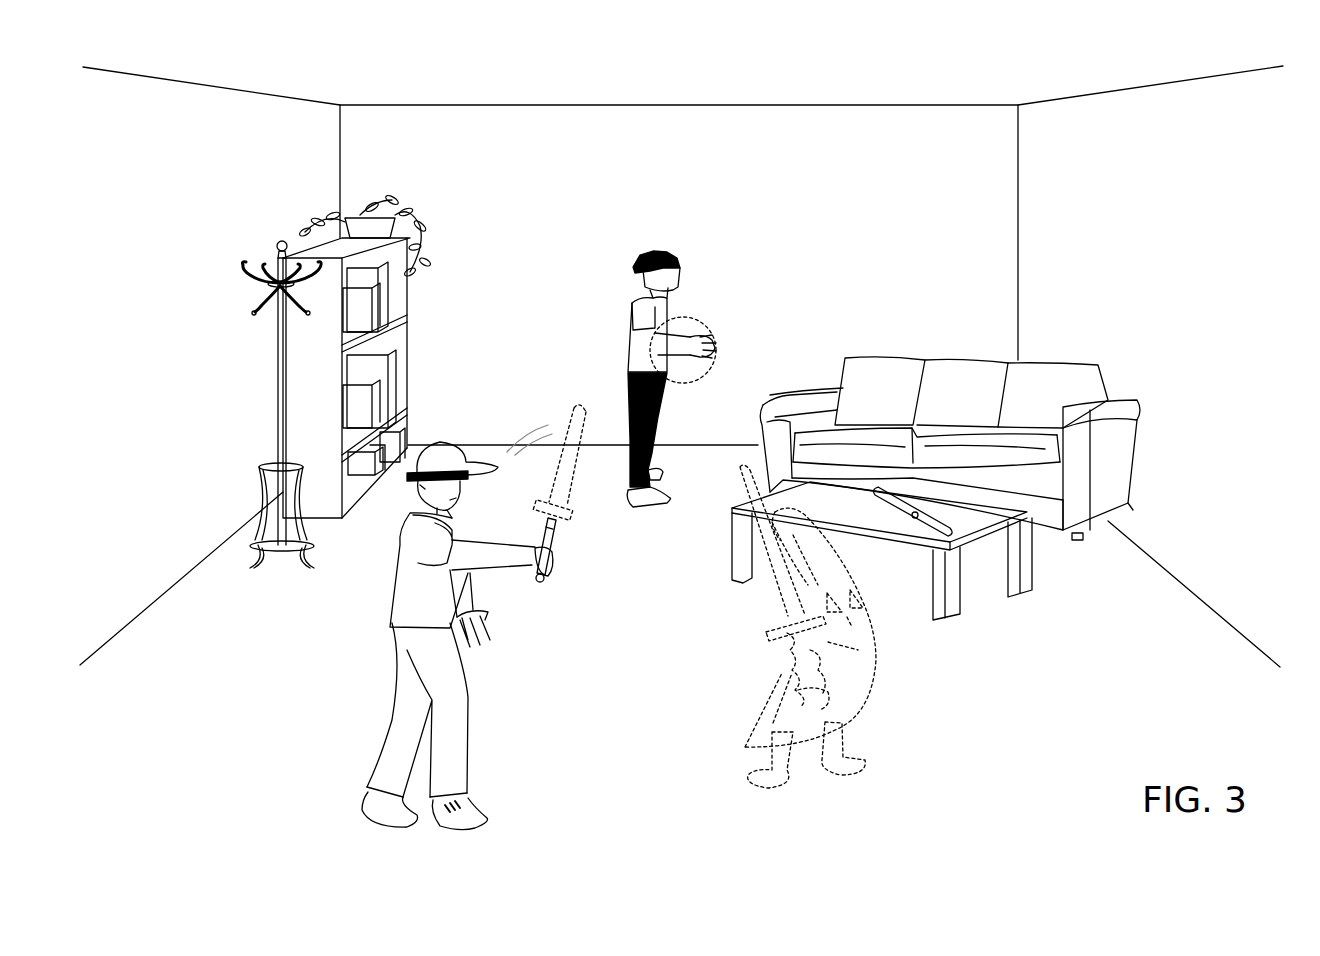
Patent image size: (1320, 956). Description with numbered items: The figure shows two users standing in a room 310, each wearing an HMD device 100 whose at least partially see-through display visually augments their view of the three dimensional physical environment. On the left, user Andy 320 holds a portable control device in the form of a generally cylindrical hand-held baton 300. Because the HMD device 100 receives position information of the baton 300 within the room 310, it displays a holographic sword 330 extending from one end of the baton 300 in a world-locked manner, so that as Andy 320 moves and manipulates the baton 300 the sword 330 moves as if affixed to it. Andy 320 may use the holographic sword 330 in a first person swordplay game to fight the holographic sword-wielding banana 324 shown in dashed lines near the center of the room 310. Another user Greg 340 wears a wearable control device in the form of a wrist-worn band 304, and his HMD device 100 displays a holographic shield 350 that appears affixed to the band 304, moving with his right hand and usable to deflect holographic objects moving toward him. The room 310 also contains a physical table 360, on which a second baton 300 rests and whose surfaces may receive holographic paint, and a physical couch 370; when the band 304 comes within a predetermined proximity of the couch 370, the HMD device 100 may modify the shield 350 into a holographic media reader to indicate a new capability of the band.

The HMD device 100 is at (468, 474).
The hand-held baton 300 is at (552, 545).
The wrist-worn band 304 is at (697, 333).
The room 310 is at (724, 121).
The user Andy 320 is at (393, 595).
The holographic sword-wielding banana 324 is at (867, 683).
The holographic sword 330 is at (577, 463).
The user Greg 340 is at (627, 363).
The holographic shield 350 is at (695, 383).
The physical table 360 is at (965, 603).
The physical couch 370 is at (873, 358).